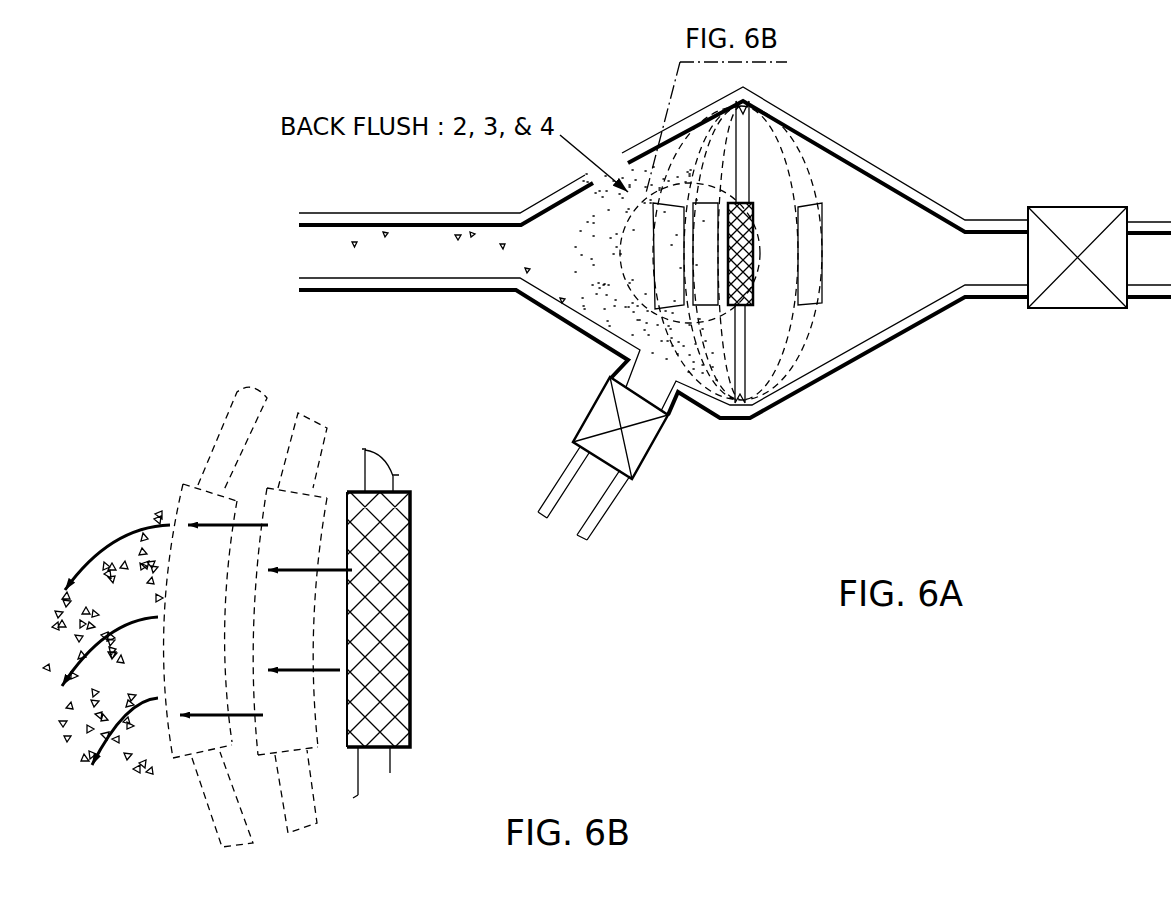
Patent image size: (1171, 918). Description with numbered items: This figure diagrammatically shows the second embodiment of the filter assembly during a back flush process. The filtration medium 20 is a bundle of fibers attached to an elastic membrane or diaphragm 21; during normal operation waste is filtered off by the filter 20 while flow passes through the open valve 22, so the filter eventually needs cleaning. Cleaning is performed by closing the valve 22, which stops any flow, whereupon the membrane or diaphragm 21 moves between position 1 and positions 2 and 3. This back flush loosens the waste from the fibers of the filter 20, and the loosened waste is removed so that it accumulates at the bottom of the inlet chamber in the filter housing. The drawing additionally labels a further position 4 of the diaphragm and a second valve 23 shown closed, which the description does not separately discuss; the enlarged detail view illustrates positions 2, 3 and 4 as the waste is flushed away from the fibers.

In FIG. 6A, the position 1 is at (813, 254).
In FIG. 6A, the position 2 is at (668, 256).
In FIG. 6B, the position 2 is at (215, 617).
In FIG. 6A, the position 3 is at (705, 254).
In FIG. 6B, the position 3 is at (290, 623).
In FIG. 6A, the filter segment 4 (active, hatched) 4 is at (740, 254).
In FIG. 6B, the filter segment 4 (active, hatched) 4 is at (378, 619).
In FIG. 6A, the filtration medium 20 is at (824, 206).
In FIG. 6B, the filtration medium 20 is at (431, 619).
In FIG. 6A, the elastic membrane or diaphragm 21 is at (740, 353).
In FIG. 6B, the elastic membrane or diaphragm 21 is at (368, 775).
In FIG. 6A, the valve 22 is at (1075, 200).
In FIG. 6A, the drain valve (closed) 23 is at (657, 452).